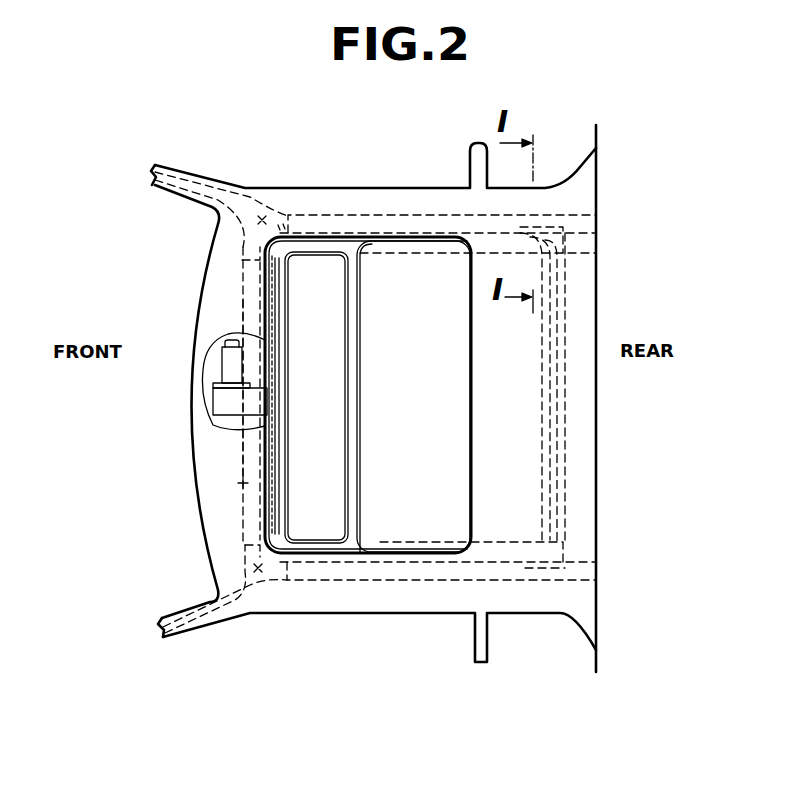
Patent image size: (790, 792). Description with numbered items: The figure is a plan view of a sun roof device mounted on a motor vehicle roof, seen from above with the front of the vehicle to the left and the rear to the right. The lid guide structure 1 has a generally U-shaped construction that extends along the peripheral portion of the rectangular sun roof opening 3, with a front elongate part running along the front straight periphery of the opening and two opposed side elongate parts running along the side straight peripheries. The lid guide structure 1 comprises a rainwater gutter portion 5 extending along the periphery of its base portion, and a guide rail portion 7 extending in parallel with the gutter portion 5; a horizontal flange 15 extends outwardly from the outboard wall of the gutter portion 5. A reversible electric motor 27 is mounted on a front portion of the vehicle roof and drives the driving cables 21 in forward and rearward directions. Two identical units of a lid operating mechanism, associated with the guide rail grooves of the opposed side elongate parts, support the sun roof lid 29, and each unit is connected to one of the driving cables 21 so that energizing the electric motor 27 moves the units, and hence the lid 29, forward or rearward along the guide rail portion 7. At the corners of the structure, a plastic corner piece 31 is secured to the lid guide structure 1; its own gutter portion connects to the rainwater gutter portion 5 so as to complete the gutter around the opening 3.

The lid guide structure 1 is at (287, 280).
The sun roof opening 3 is at (338, 258).
The rainwater gutter portion 5 is at (267, 282).
The guide rail portion 7 is at (283, 380).
The horizontal flange 15 is at (240, 483).
The driving cables 21 is at (276, 321).
The electric motor 27 is at (220, 403).
The sun roof lid 29 is at (410, 270).
The plastic corner piece 31 is at (271, 212).